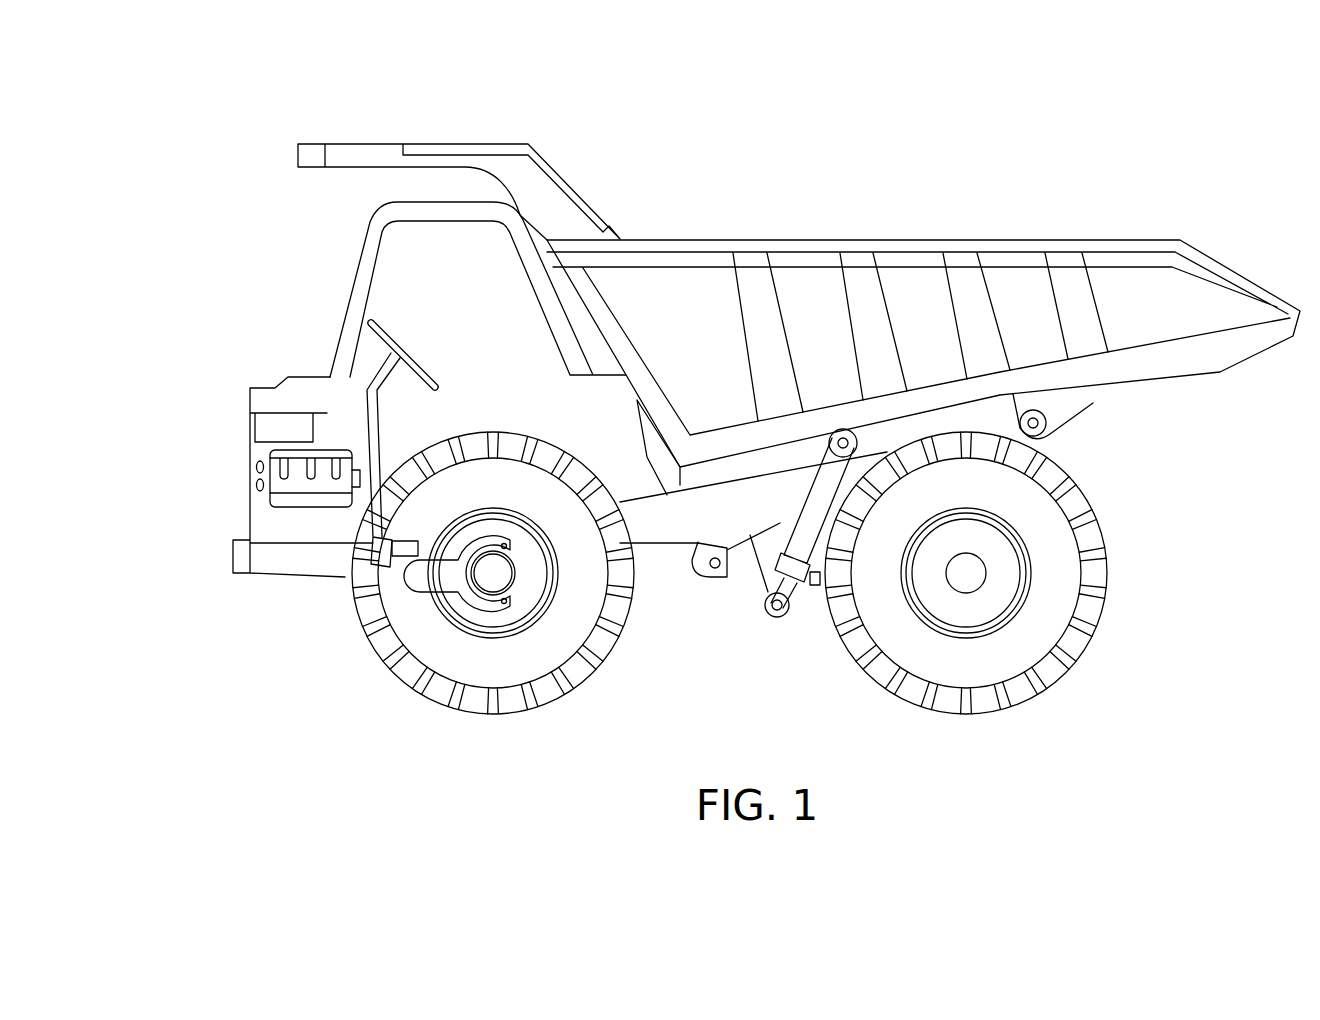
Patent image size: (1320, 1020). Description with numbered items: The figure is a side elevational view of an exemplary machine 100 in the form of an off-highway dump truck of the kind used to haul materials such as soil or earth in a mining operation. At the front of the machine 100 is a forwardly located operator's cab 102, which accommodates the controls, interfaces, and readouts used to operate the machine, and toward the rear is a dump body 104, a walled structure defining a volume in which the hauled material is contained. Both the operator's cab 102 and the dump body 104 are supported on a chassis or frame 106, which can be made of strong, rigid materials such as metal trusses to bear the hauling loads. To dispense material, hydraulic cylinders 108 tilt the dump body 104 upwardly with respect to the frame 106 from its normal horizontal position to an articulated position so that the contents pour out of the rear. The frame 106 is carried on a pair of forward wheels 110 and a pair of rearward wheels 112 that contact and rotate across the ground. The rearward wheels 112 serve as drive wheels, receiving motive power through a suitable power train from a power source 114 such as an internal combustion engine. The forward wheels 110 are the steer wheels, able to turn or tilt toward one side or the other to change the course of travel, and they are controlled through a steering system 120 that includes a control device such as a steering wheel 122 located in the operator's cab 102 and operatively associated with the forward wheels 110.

The machine 100 is at (211, 121).
The operator's cab 102 is at (385, 285).
The dump body 104 is at (668, 305).
The frame 106 is at (673, 543).
The hydraulic cylinders 108 is at (802, 537).
The forward wheels 110 is at (390, 647).
The rearward wheels 112 is at (1073, 633).
The power source 114 is at (290, 485).
The steering system 120 is at (366, 490).
The steering wheel 122 is at (378, 340).